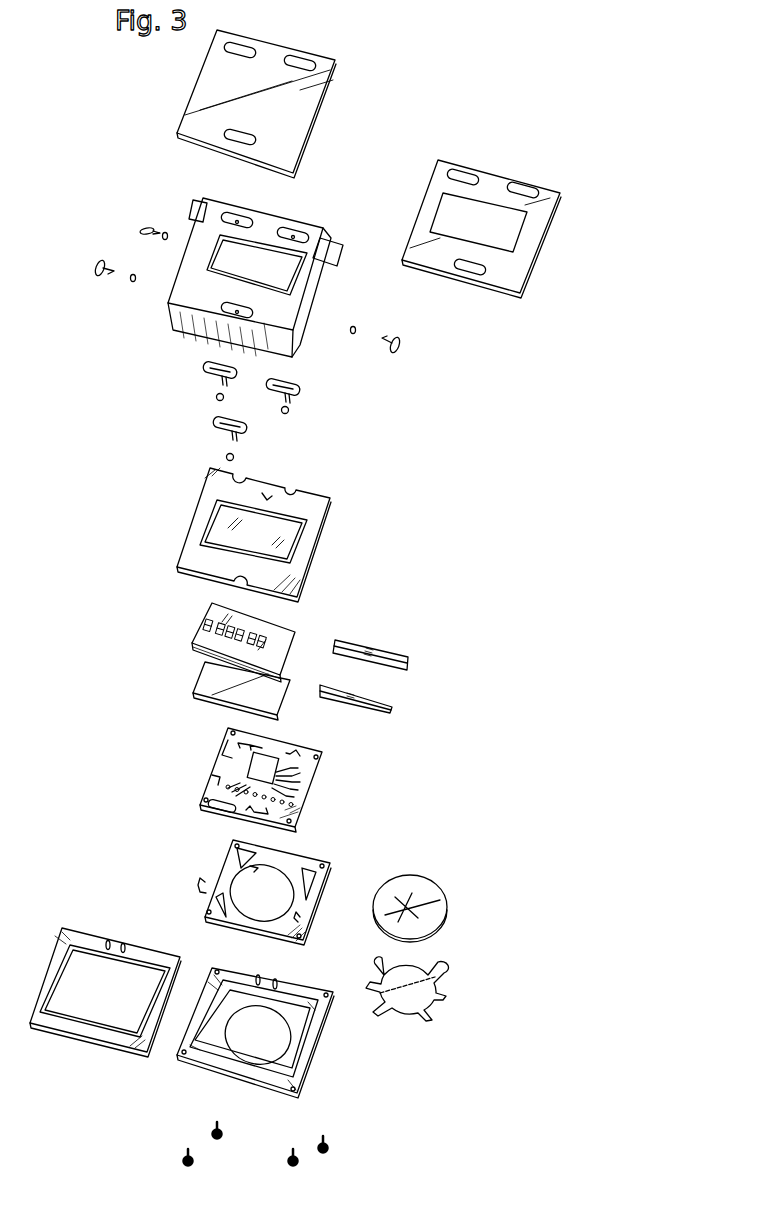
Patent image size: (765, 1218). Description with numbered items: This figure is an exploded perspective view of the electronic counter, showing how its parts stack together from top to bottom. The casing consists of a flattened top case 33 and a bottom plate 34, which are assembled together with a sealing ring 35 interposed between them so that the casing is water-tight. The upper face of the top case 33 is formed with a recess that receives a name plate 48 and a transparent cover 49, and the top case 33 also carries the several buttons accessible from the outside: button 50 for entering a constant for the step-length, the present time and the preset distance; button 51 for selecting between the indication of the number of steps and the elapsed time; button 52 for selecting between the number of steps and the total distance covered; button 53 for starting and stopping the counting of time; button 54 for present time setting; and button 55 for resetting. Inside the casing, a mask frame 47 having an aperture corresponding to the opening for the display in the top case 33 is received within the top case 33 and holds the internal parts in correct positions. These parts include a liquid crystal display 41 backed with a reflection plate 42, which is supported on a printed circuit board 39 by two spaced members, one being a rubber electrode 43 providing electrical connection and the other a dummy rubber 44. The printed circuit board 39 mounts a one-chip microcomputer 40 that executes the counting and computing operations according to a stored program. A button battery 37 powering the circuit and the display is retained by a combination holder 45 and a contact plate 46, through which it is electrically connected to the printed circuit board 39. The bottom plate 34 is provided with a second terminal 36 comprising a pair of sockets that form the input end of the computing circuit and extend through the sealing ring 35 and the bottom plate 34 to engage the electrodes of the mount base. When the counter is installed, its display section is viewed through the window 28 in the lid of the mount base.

The window 28 is at (336, 253).
The top case 33 is at (308, 219).
The bottom plate 34 is at (300, 1045).
The sealing ring 35 is at (66, 926).
The second terminal 36 is at (255, 975).
The button battery 37 is at (440, 905).
The printed circuit board 39 is at (222, 766).
The one-chip microcomputer 40 is at (272, 772).
The liquid crystal display 41 is at (210, 615).
The reflection plate 42 is at (210, 680).
The rubber electrode 43 is at (412, 660).
The dummy rubber 44 is at (395, 710).
The holder 45 is at (326, 860).
The contact plate 46 is at (436, 992).
The mask frame 47 is at (318, 513).
The name plate 48 is at (520, 294).
The transparent cover 49 is at (307, 113).
The button 50 is at (95, 270).
The button 51 is at (205, 376).
The button 52 is at (301, 389).
The button 53 is at (248, 432).
The button 54 is at (400, 350).
The button 55 is at (144, 226).